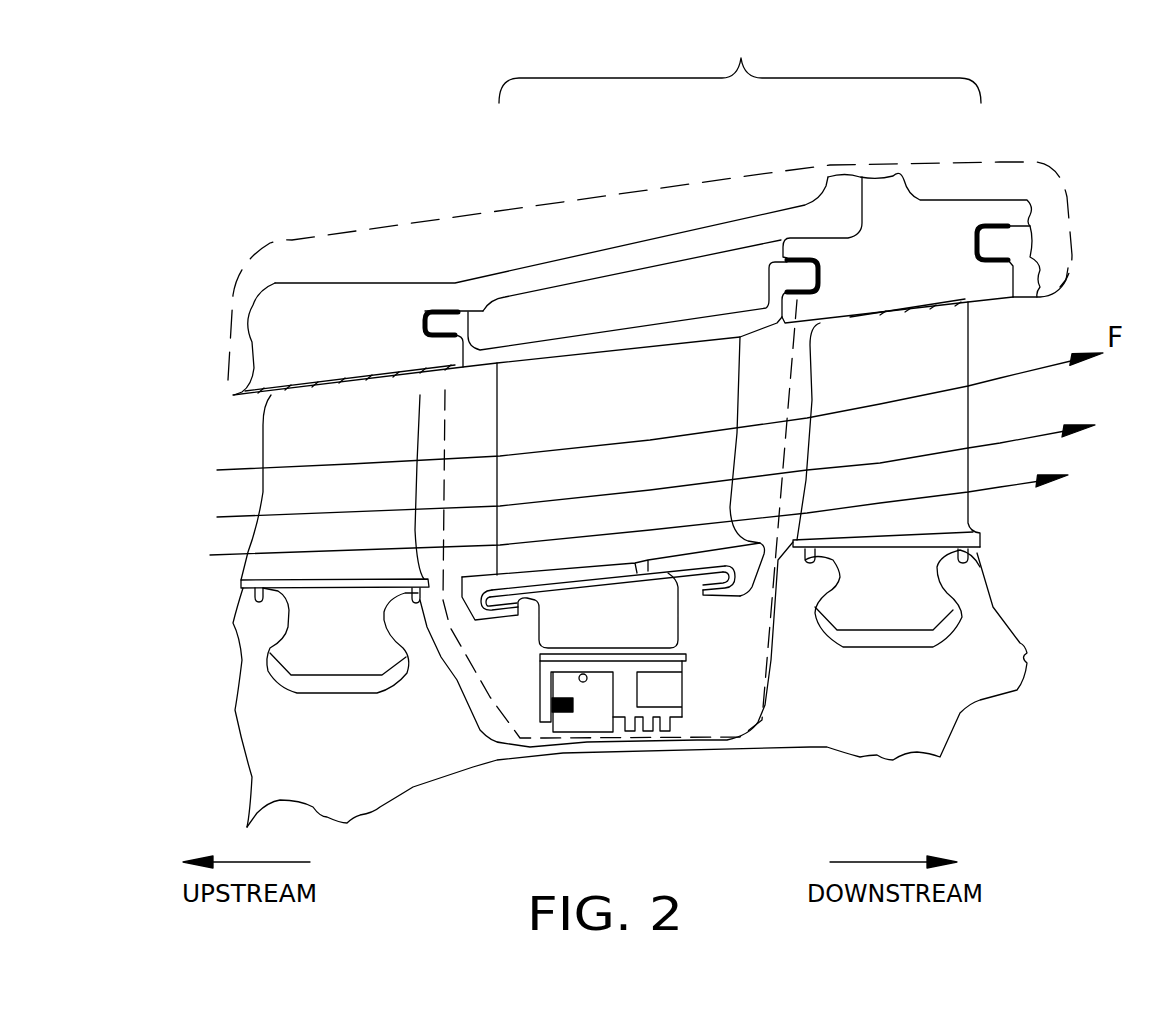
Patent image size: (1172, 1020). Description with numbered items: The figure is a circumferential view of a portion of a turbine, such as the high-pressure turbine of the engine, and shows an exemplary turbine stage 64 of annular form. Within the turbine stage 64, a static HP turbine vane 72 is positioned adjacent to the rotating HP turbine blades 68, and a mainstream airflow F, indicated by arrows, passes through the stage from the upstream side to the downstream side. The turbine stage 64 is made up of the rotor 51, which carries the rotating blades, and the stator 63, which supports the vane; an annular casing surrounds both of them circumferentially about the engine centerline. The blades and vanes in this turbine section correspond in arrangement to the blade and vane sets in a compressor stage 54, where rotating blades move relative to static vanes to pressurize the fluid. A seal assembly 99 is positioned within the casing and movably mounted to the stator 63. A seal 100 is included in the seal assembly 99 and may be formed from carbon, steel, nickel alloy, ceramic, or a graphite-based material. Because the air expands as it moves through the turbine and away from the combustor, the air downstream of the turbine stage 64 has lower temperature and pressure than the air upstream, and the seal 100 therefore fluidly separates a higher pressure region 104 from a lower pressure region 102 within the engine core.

The rotor 51 is at (362, 795).
The compressor stage 54 is at (748, 48).
The stator 63 is at (706, 181).
The turbine stage 64 is at (212, 177).
The HP turbine blades 68 is at (335, 439).
The HP turbine vane 72 is at (638, 407).
The seal assembly 99 is at (585, 756).
The seal 100 is at (592, 713).
The lower pressure region 102 is at (744, 638).
The higher pressure region 104 is at (526, 650).